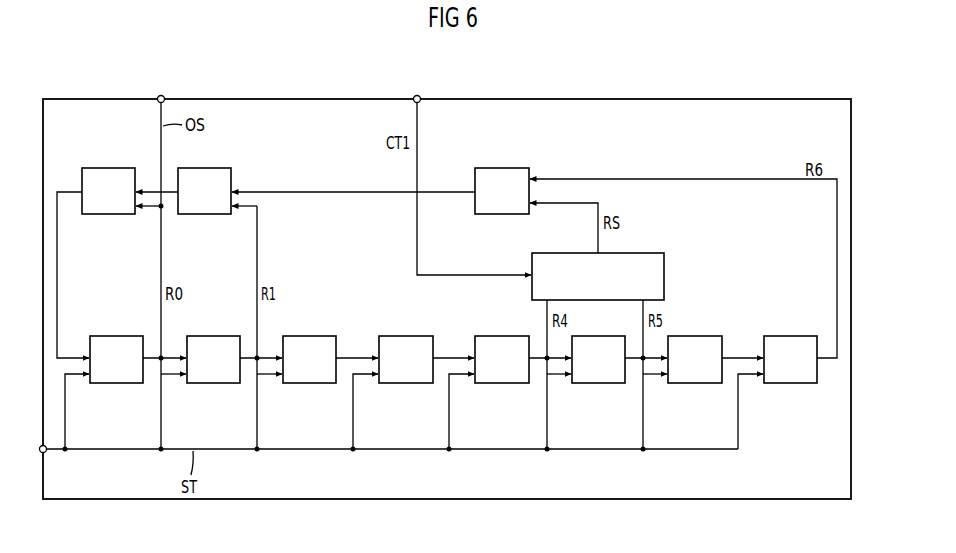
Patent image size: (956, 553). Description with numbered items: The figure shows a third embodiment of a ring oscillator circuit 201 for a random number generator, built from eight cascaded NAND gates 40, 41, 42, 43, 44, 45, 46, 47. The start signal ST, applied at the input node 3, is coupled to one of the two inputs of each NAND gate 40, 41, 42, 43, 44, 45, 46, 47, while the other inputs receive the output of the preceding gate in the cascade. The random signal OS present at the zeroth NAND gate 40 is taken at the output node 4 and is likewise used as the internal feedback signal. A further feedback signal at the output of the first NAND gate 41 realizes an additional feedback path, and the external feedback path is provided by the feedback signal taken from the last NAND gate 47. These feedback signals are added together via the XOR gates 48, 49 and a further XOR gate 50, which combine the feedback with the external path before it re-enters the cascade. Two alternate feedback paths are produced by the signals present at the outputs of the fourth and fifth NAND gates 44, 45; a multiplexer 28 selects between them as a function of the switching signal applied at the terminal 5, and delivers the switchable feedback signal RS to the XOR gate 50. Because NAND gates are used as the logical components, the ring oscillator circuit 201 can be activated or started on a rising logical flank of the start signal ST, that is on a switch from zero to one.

The input node 3 is at (46, 452).
The output node 4 is at (161, 95).
The second terminal (control signal CT1 node) 5 is at (417, 95).
The multiplexer 28 is at (664, 277).
The zeroth NAND gate 40 is at (118, 384).
The first NAND gate 41 is at (214, 384).
The NAND gate 42 is at (311, 384).
The NAND gate 43 is at (407, 384).
The fourth NAND gate 44 is at (503, 384).
The fifth NAND gate 45 is at (600, 384).
The NAND gate 46 is at (696, 384).
The NAND gate 47 is at (792, 384).
The XOR gate 48 is at (110, 216).
The XOR gate 49 is at (207, 216).
The XOR gate 50 is at (502, 172).
The ring oscillator circuit 201 is at (745, 97).